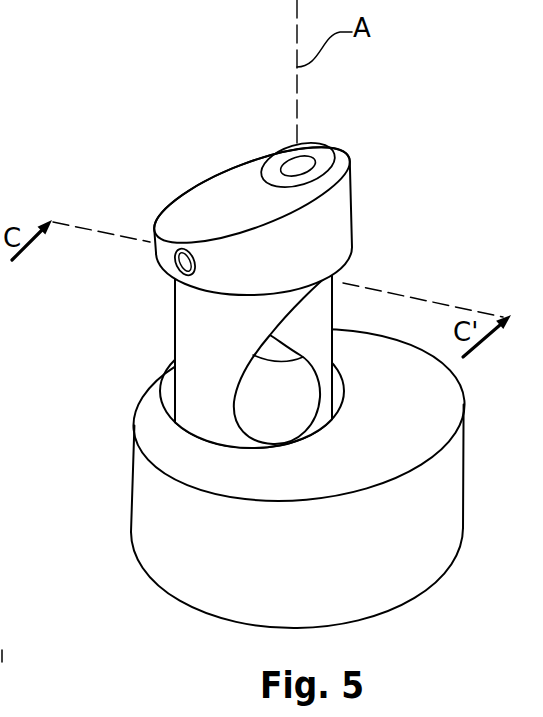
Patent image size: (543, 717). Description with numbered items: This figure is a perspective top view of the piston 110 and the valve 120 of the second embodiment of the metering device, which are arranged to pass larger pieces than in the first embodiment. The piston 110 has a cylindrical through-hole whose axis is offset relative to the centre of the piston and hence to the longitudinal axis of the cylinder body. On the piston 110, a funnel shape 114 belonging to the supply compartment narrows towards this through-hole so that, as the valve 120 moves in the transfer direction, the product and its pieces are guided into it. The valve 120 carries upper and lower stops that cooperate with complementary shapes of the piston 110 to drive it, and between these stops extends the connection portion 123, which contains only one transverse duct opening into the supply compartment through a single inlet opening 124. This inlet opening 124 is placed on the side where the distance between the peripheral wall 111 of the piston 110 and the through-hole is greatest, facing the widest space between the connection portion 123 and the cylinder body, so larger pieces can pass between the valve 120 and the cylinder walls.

The piston 110 is at (296, 483).
The peripheral wall 111 is at (203, 557).
The funnel shape 114 is at (397, 430).
The valve 120 is at (282, 288).
The connection portion 123 is at (210, 357).
The inlet opening 124 is at (330, 350).